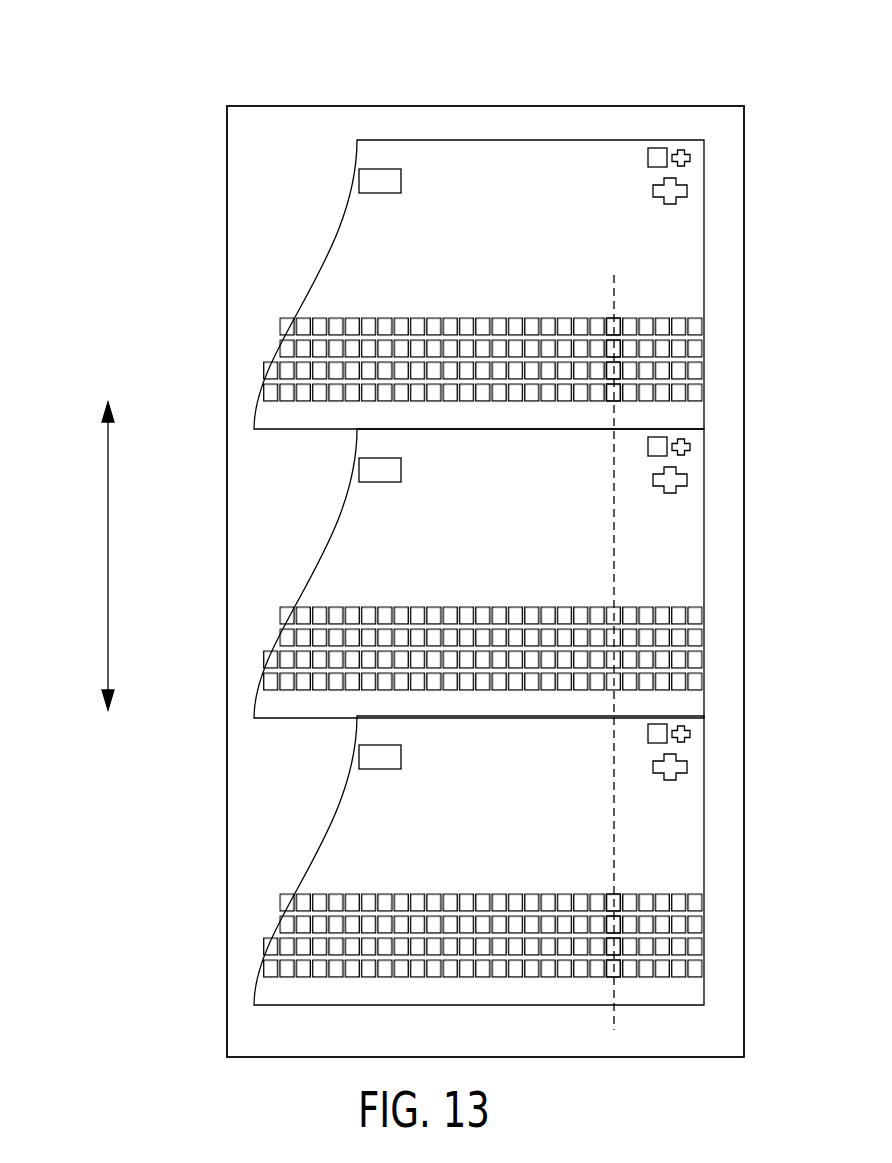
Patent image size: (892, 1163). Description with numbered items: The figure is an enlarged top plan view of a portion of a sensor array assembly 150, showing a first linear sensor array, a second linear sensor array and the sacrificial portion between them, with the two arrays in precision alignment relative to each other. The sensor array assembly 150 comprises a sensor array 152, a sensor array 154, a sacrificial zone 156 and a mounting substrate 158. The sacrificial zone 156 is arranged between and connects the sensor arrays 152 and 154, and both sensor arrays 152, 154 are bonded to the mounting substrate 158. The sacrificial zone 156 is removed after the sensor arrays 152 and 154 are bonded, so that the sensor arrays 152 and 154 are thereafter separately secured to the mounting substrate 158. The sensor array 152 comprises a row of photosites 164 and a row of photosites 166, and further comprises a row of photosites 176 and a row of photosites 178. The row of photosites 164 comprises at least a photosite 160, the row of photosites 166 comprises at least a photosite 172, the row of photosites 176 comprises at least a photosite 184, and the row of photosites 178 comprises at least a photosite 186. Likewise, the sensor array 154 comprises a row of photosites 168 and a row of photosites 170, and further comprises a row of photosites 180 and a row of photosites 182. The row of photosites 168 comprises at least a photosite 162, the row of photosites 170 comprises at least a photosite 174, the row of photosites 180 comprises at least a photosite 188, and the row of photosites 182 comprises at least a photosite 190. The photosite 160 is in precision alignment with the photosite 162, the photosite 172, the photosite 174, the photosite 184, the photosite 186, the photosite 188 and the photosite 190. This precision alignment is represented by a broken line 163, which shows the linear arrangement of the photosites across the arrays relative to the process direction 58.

The process direction 58 is at (108, 553).
The sensor array assembly 150 is at (257, 101).
The sensor array 152 is at (760, 428).
The sensor array 154 is at (760, 726).
The sacrificial zone 156 is at (760, 722).
The mounting substrate 158 is at (346, 118).
The photosite 160 is at (613, 326).
The photosite 162 is at (613, 902).
The broken line 163 is at (615, 533).
The row of photosites 164 is at (280, 320).
The row of photosites 166 is at (270, 343).
The row of photosites 168 is at (280, 892).
The row of photosites 170 is at (270, 915).
The photosite 172 is at (616, 349).
The photosite 174 is at (616, 925).
The row of photosites 176 is at (265, 363).
The row of photosites 178 is at (257, 387).
The row of photosites 180 is at (265, 935).
The row of photosites 182 is at (257, 959).
The photosite 184 is at (613, 371).
The photosite 186 is at (613, 398).
The photosite 188 is at (613, 947).
The photosite 190 is at (613, 974).